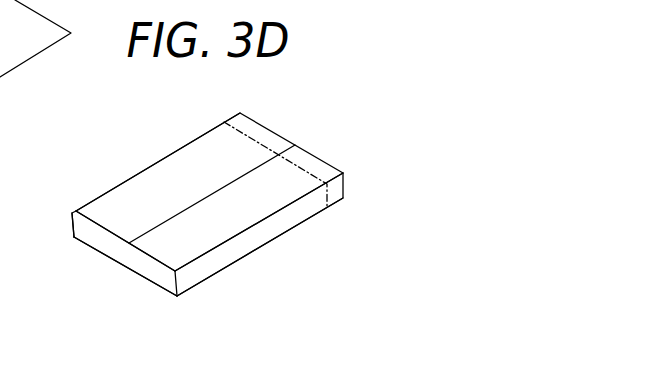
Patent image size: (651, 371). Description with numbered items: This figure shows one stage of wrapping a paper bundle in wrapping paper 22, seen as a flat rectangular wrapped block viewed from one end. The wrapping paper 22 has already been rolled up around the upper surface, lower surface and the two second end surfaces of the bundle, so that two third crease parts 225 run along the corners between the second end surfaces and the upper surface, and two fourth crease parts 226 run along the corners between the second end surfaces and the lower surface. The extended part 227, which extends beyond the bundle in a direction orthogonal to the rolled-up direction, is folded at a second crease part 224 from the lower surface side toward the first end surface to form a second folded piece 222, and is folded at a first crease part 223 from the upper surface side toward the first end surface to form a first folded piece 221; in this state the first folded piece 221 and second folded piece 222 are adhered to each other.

The wrapping paper 22 is at (220, 296).
The first folded piece 221 is at (92, 241).
The second folded piece 222 is at (74, 211).
The first crease part 223 is at (135, 268).
The second crease part 224 is at (97, 218).
The third crease part 225 is at (248, 258).
The fourth crease part 226 is at (182, 147).
The extended part 227 is at (243, 128).